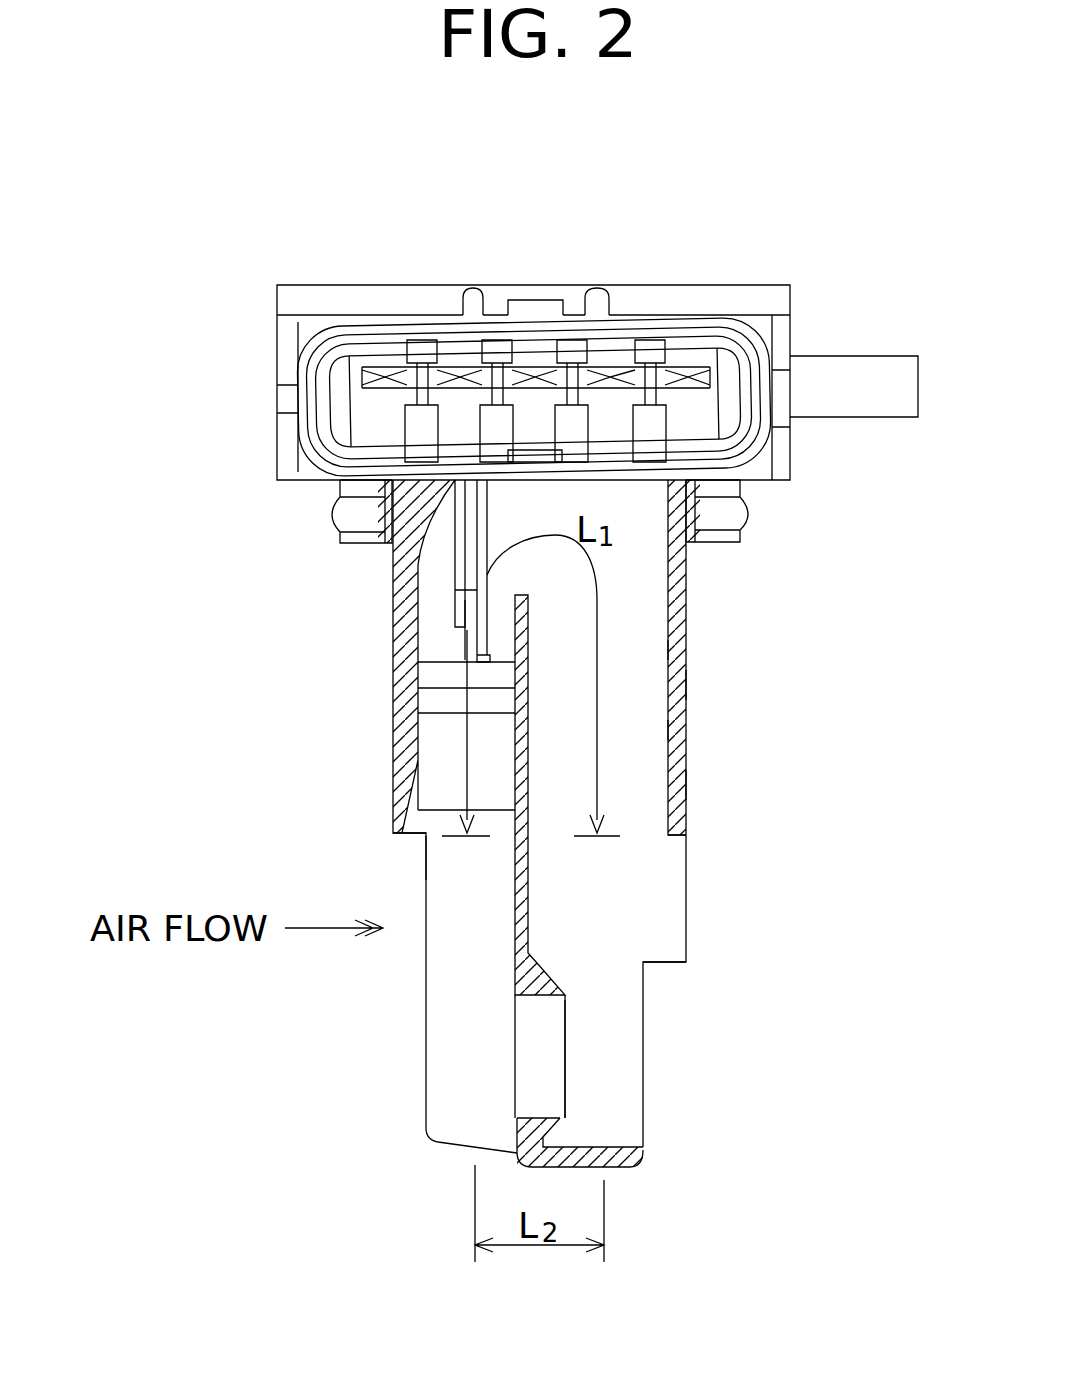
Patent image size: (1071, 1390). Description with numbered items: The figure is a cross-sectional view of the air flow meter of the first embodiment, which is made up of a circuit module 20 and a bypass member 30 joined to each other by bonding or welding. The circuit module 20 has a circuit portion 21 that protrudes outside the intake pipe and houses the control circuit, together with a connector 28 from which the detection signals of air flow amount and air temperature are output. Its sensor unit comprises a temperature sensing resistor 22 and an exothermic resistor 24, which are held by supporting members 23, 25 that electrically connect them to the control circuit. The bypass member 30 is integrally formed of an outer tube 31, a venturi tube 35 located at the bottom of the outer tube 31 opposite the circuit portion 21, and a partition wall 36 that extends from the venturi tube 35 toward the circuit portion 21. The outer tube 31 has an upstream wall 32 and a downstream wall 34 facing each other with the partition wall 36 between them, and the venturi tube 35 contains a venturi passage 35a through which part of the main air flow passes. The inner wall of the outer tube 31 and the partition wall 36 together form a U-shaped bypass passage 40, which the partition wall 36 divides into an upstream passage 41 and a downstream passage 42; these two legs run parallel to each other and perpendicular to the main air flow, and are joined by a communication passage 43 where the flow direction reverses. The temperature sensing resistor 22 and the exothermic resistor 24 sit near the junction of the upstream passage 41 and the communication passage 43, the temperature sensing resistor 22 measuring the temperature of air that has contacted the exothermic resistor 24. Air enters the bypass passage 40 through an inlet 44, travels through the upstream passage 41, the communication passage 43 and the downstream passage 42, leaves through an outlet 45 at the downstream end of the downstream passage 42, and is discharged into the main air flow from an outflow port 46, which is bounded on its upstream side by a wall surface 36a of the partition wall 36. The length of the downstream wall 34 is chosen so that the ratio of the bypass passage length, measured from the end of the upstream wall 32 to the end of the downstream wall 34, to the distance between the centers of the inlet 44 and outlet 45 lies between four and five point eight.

The circuit module 20 is at (678, 270).
The circuit portion 21 is at (310, 285).
The temperature sensing resistor 22 is at (448, 618).
The supporting member 23 is at (453, 563).
The exothermic resistor 24 is at (475, 647).
The supporting member 25 is at (480, 592).
The connector 28 is at (318, 350).
The bypass member 30 is at (716, 593).
The outer tube 31 is at (686, 785).
The upstream wall 32 is at (397, 786).
The downstream wall 34 is at (686, 683).
The venturi tube 35 is at (630, 1170).
The venturi passage 35a is at (535, 1063).
The partition wall 36 is at (517, 917).
The wall surface 36a is at (533, 878).
The bypass passage 40 is at (645, 650).
The upstream passage 41 is at (440, 737).
The downstream passage 42 is at (645, 730).
The communication passage 43 is at (535, 522).
The inlet 44 is at (498, 843).
The outlet 45 is at (640, 836).
The outflow port 46 is at (613, 902).